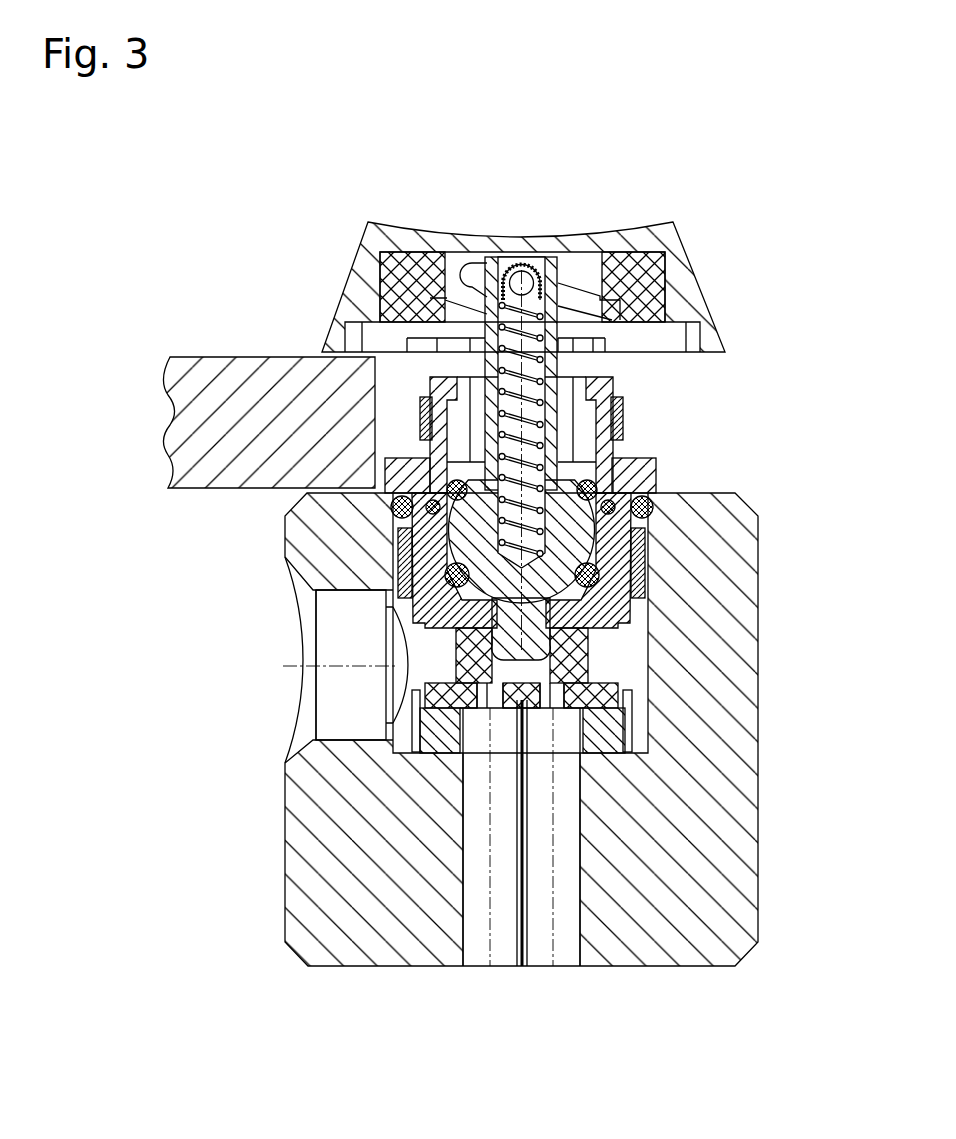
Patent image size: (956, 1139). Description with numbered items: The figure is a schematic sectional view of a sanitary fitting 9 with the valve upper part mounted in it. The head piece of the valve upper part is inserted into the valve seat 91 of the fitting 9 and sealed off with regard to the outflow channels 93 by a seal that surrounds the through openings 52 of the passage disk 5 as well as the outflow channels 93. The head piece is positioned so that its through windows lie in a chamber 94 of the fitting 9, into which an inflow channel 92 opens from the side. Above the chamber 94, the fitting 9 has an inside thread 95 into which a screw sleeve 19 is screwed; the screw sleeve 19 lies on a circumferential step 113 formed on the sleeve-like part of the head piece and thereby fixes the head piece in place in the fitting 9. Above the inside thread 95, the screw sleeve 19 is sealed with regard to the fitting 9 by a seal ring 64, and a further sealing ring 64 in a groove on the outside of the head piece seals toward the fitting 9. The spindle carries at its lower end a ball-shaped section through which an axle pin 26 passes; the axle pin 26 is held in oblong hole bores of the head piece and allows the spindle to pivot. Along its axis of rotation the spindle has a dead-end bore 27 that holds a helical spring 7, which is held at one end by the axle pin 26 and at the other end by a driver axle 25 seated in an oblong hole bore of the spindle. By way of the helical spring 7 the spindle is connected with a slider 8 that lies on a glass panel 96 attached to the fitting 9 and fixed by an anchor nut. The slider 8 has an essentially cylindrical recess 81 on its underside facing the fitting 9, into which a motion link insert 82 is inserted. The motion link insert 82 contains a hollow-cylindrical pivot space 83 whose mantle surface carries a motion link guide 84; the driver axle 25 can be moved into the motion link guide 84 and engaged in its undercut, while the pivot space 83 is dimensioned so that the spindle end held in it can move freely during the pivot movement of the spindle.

The slider 8 is at (690, 248).
The recess 81 is at (668, 285).
The motion link insert 82 is at (635, 260).
The pivot space 83 is at (458, 257).
The motion link guide 84 is at (472, 277).
The driver axle 25 is at (530, 262).
The glass panel 96 is at (247, 395).
The helical spring 7 is at (540, 383).
The dead-end bore 27 is at (533, 417).
The screw sleeve 19 is at (656, 470).
The seal ring 64 is at (650, 505).
The axle pin 26 is at (400, 533).
The inside thread 95 is at (400, 557).
The step 113 is at (640, 585).
The fitting 9 is at (758, 632).
The inflow channel 92 is at (345, 645).
The passage disk 5 is at (427, 700).
The chamber 94 is at (638, 712).
The through openings 52 is at (560, 698).
The valve seat 91 is at (430, 742).
The outflow channels 93 is at (478, 937).